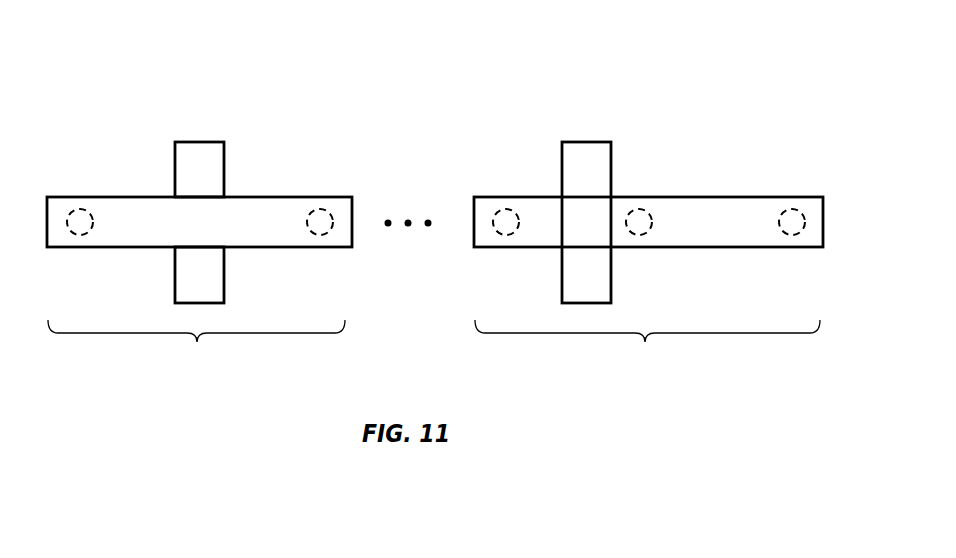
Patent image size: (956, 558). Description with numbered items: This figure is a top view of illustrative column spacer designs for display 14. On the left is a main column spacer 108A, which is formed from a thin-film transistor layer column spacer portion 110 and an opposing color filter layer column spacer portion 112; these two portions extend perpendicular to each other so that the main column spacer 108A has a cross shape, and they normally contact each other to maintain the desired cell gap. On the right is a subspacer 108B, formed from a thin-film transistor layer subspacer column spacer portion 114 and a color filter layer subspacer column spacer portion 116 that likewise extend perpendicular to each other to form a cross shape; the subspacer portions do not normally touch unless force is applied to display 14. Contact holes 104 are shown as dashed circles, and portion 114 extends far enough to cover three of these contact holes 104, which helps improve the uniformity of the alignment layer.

The display 14 is at (560, 82).
The contact holes 104 is at (80, 236).
The main column spacer 108A is at (196, 342).
The subspacer 108B is at (647, 342).
The thin-film transistor layer column spacer portion 110 is at (213, 164).
The color filter layer column spacer portion 112 is at (112, 207).
The thin-film transistor layer subspacer column spacer portion 114 is at (540, 211).
The color filter layer subspacer column spacer portion 116 is at (600, 164).